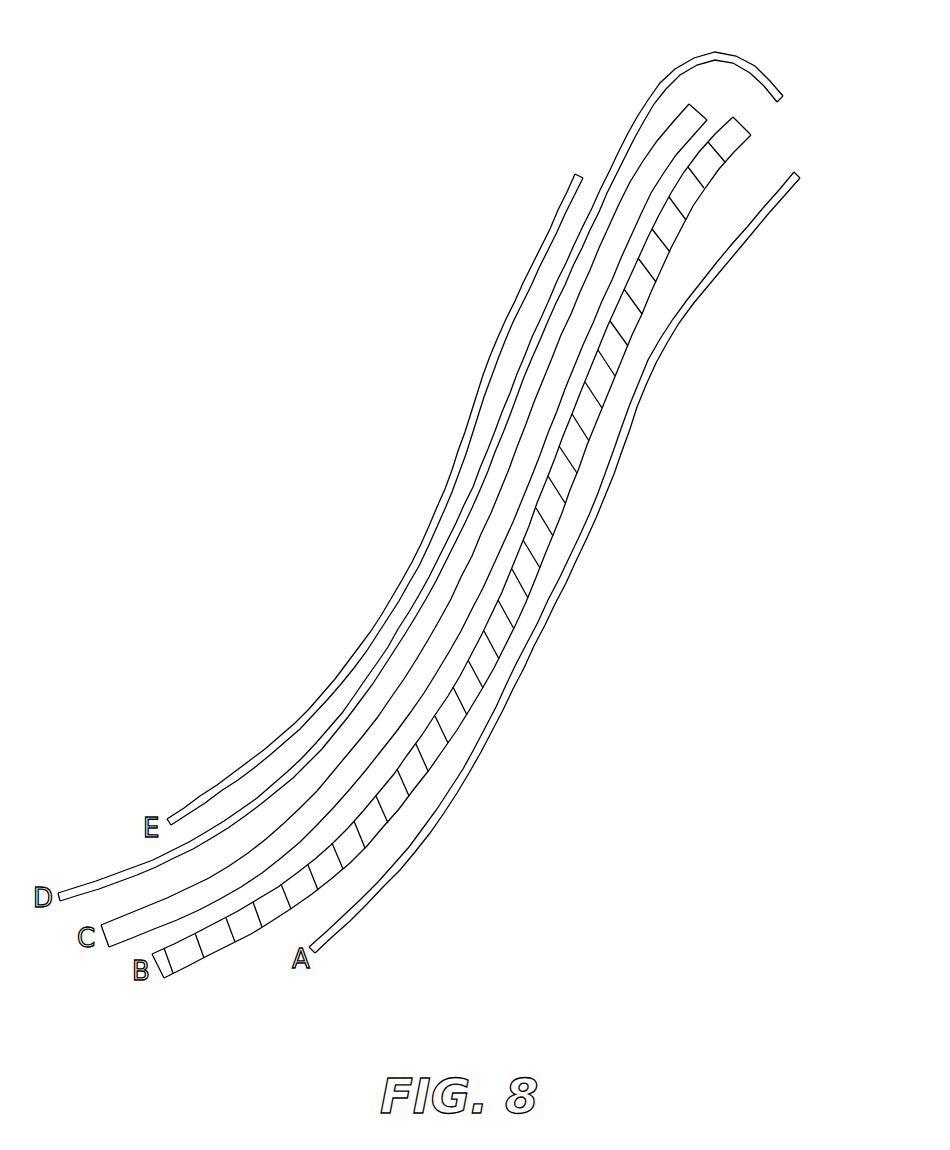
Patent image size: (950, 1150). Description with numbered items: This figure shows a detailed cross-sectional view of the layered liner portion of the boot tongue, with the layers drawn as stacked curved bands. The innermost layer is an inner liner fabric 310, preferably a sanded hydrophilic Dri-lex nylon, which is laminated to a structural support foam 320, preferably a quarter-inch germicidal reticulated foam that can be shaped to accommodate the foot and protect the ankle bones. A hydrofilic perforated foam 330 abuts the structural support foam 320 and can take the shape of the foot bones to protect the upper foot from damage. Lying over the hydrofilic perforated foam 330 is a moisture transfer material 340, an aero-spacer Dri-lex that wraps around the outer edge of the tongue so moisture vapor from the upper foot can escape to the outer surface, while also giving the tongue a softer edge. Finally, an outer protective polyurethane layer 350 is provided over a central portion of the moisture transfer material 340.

The inner liner fabric 310 is at (749, 225).
The structural support foam 320 is at (751, 134).
The hydrofilic perforated foam 330 is at (698, 112).
The moisture transfer material 340 is at (695, 57).
The outer protective polyurethane layer 350 is at (556, 212).